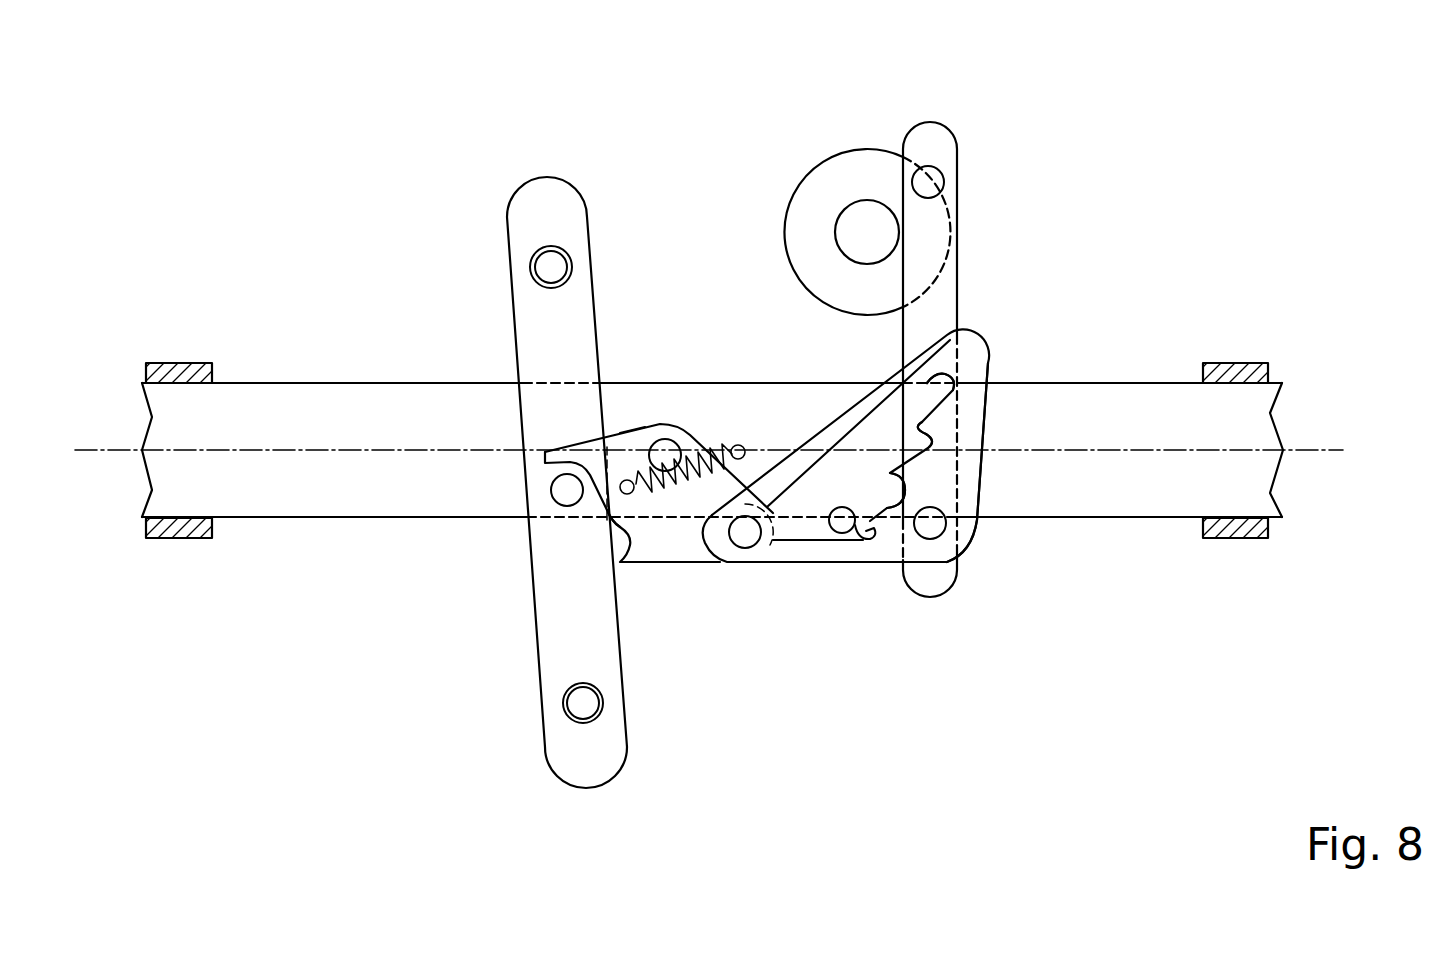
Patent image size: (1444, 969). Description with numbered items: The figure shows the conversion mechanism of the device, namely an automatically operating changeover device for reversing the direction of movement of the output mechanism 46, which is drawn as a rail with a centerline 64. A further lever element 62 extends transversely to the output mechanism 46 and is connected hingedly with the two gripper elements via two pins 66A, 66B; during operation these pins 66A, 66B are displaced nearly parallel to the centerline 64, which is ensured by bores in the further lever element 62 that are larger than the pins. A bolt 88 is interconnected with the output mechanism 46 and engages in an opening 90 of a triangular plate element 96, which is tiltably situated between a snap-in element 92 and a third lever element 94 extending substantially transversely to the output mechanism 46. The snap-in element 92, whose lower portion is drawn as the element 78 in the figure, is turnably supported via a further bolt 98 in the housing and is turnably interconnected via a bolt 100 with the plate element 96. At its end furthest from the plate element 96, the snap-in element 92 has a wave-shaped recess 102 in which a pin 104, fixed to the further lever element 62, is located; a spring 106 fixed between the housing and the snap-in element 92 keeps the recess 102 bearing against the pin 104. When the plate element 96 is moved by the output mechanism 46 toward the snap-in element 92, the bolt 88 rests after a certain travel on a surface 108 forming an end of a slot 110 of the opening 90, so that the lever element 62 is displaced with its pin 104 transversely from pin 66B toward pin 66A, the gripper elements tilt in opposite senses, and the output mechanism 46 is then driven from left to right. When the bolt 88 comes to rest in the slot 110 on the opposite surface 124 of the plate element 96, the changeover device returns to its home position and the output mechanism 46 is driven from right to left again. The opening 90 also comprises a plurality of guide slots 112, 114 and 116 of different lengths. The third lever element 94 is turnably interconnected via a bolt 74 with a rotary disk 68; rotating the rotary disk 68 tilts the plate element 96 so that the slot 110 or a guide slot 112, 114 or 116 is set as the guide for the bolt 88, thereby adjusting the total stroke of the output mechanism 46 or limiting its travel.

The output mechanism 46 is at (227, 410).
The centerline 64 is at (100, 450).
The further lever element 62 is at (542, 313).
The pin 66A is at (550, 265).
The pin 66B is at (583, 703).
The rotary disk 68 is at (818, 207).
The bolt 74 is at (920, 185).
The pawl 78 is at (625, 565).
The bolt 88 is at (858, 537).
The opening 90 is at (887, 437).
The snap-in element 92 is at (633, 440).
The third lever element 94 is at (955, 198).
The plate element 96 is at (922, 550).
The further bolt 98 is at (667, 452).
The bolt 100 is at (750, 532).
The wave-shaped recess 102 is at (615, 530).
The pin 104 is at (563, 490).
The spring 106 is at (630, 472).
The surface 108 is at (777, 520).
The slot 110 is at (815, 528).
The guide slot 112 is at (893, 493).
The guide slot 114 is at (920, 443).
The guide slot 116 is at (940, 390).
The surface 124 is at (930, 597).